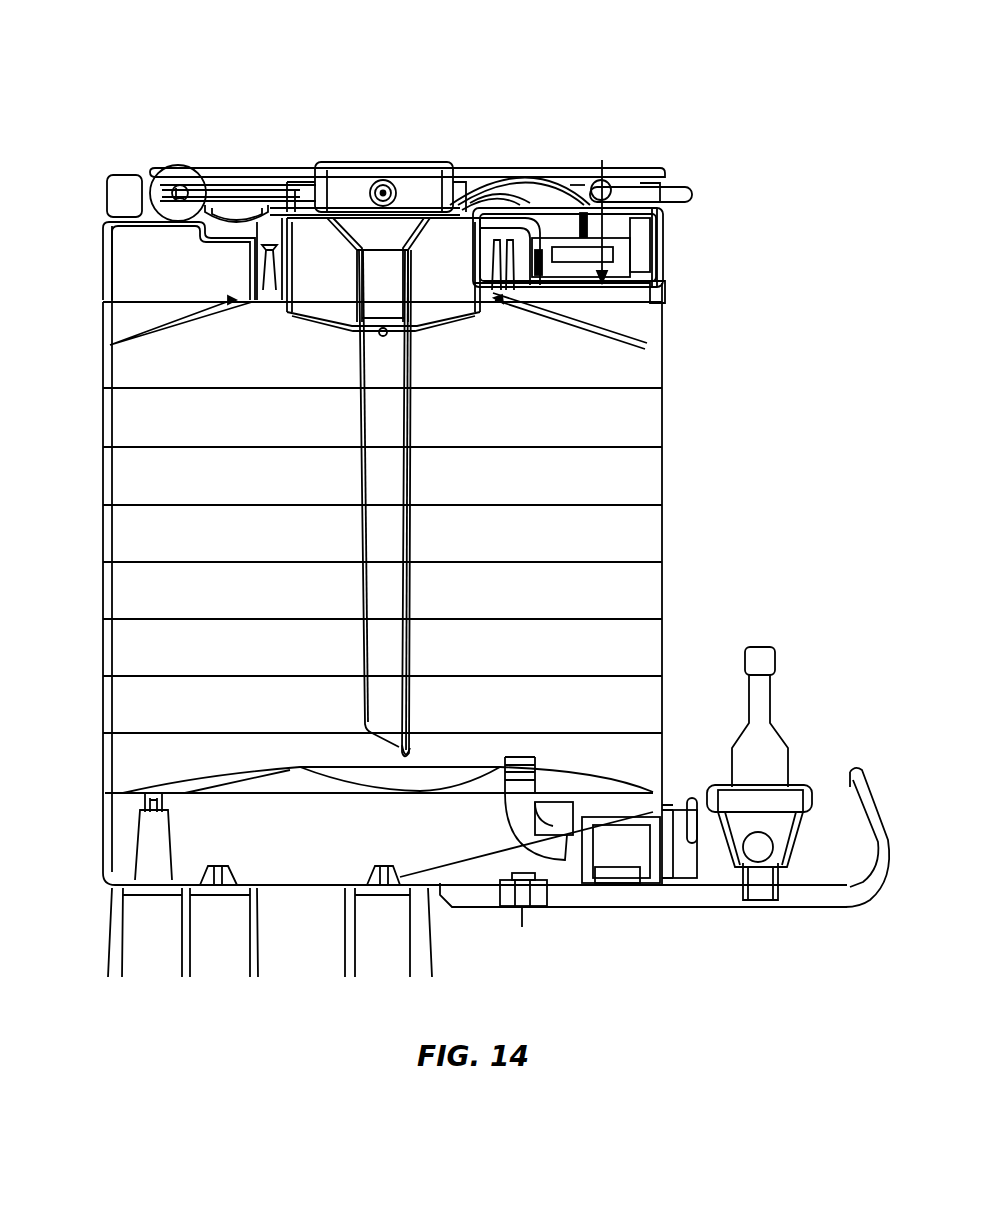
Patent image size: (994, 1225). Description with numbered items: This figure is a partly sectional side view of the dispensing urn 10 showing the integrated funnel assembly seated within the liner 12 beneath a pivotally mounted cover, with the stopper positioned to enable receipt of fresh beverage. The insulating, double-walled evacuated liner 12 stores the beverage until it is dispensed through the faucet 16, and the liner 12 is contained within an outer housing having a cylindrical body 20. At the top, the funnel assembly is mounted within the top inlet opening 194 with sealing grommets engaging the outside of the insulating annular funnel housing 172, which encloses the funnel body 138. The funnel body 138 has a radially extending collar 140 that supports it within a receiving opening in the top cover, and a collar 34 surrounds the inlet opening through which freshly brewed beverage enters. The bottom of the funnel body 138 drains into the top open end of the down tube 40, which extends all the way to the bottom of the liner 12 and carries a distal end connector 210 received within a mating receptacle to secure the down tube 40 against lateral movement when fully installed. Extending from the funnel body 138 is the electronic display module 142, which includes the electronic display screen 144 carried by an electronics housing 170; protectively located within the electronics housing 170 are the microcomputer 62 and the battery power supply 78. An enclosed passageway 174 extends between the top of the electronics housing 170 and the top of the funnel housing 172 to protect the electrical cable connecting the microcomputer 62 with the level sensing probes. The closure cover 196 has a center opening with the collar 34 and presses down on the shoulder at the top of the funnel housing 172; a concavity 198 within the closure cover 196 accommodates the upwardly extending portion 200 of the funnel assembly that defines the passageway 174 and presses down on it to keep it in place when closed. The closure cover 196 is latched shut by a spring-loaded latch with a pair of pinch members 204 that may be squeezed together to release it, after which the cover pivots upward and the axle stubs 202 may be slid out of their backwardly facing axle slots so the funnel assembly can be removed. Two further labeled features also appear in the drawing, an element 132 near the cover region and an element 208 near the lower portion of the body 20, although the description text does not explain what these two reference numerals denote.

The dispensing urn 10 is at (556, 45).
The liner 12 is at (654, 470).
The faucet 16 is at (778, 745).
The cylindrical body 20 is at (664, 403).
The collar 34 is at (443, 170).
The down tube 40 is at (372, 596).
The microcomputer 62 is at (607, 245).
The battery power supply 78 is at (643, 265).
The lid 132 is at (230, 210).
The funnel body 138 is at (347, 207).
The radially extending collar 140 is at (275, 213).
The electronic display module 142 is at (648, 193).
The electronic display screen 144 is at (653, 215).
The electronics housing 170 is at (570, 250).
The funnel housing 172 is at (340, 322).
The enclosed passageway 174 is at (558, 197).
The top inlet opening 194 is at (290, 262).
The closure cover 196 is at (592, 177).
The concavity 198 is at (577, 170).
The upwardly extending portion 200 is at (120, 205).
The axle stubs 202 is at (183, 177).
The pinch members 204 is at (683, 193).
The base plate 208 is at (630, 742).
The distal end connector 210 is at (418, 752).